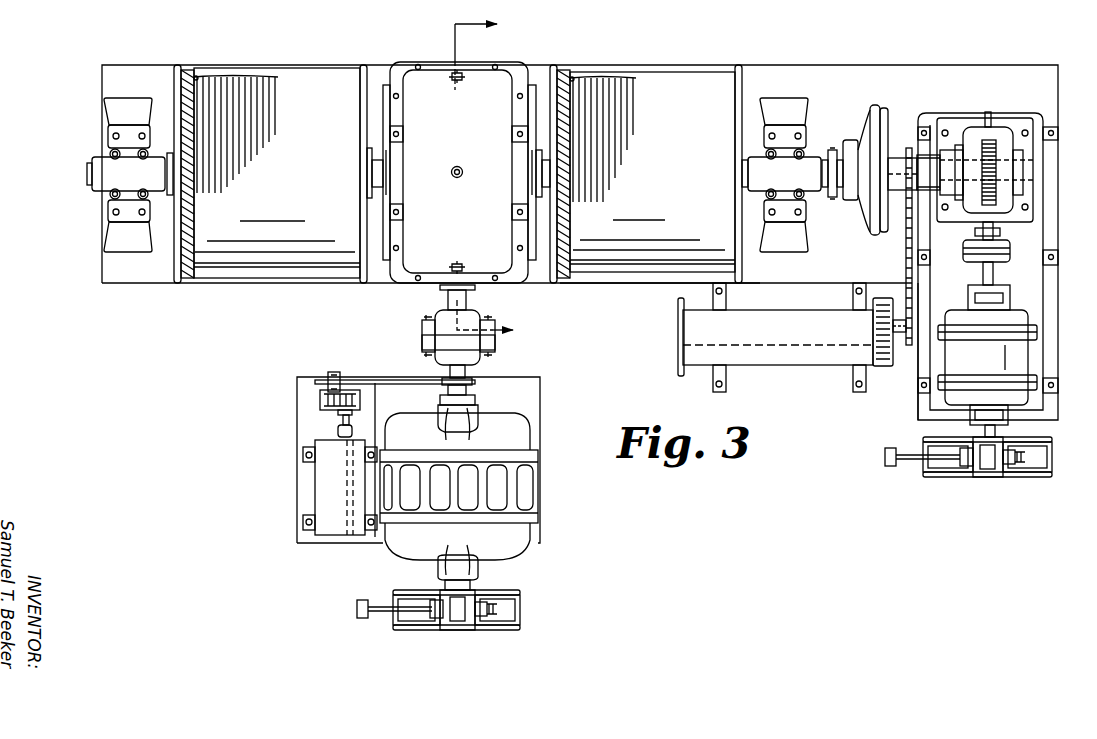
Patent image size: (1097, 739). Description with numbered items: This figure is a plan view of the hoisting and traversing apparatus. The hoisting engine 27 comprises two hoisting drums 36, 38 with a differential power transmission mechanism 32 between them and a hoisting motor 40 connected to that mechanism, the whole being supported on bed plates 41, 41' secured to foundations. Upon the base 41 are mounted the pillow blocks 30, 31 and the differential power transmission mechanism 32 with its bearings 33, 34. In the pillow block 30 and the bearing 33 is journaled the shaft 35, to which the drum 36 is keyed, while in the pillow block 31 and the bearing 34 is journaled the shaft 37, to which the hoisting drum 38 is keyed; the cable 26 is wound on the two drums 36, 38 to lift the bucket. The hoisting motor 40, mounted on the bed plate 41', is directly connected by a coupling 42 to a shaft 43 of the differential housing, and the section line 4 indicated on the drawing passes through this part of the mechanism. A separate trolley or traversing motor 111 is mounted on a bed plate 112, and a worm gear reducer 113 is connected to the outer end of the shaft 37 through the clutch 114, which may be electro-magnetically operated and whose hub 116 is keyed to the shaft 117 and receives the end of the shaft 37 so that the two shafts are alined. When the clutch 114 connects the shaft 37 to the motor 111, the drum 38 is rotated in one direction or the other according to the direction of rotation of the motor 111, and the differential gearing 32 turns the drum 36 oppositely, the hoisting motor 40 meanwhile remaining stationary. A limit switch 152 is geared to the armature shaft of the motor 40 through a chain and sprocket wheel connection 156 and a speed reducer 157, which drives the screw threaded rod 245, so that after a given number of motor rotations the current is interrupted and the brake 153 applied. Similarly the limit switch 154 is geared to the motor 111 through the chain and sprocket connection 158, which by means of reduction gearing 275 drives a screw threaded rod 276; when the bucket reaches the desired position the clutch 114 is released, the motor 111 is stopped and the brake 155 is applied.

The section line 4- 4 is at (493, 179).
The cable 26 is at (190, 272).
The hoisting engine 27 is at (357, 305).
The pillow block 30 is at (130, 212).
The pillow block 31 is at (785, 160).
The differential power transmission mechanism 32 is at (510, 52).
The bearing 33 is at (398, 172).
The bearing 34 is at (517, 177).
The shaft 35 is at (88, 172).
The hoisting drum 36 is at (298, 100).
The shaft 37 is at (547, 140).
The hoisting drum 38 is at (662, 93).
The hoisting motor 40 is at (520, 438).
The bed plate 41 is at (660, 301).
The bed plate 41' is at (444, 454).
The coupling 42 is at (420, 338).
The shaft 43 is at (462, 312).
The trolley motor 111 is at (1010, 355).
The bed plate 112 is at (940, 357).
The worm gear reducer 113 is at (997, 133).
The clutch 114 is at (893, 103).
The hub 116 is at (933, 155).
The shaft 117 is at (948, 165).
The limit switch 152 is at (308, 477).
The brake 153 is at (463, 637).
The limit switch 154 is at (775, 373).
The brake 155 is at (997, 485).
The chain and sprocket wheel connection 156 is at (363, 382).
The speed reducer 157 is at (320, 397).
The chain and sprocket connection 158 is at (906, 255).
The screw threaded rod 245 is at (345, 488).
The reduction gearing 275 is at (883, 368).
The screw threaded rod 276 is at (808, 352).